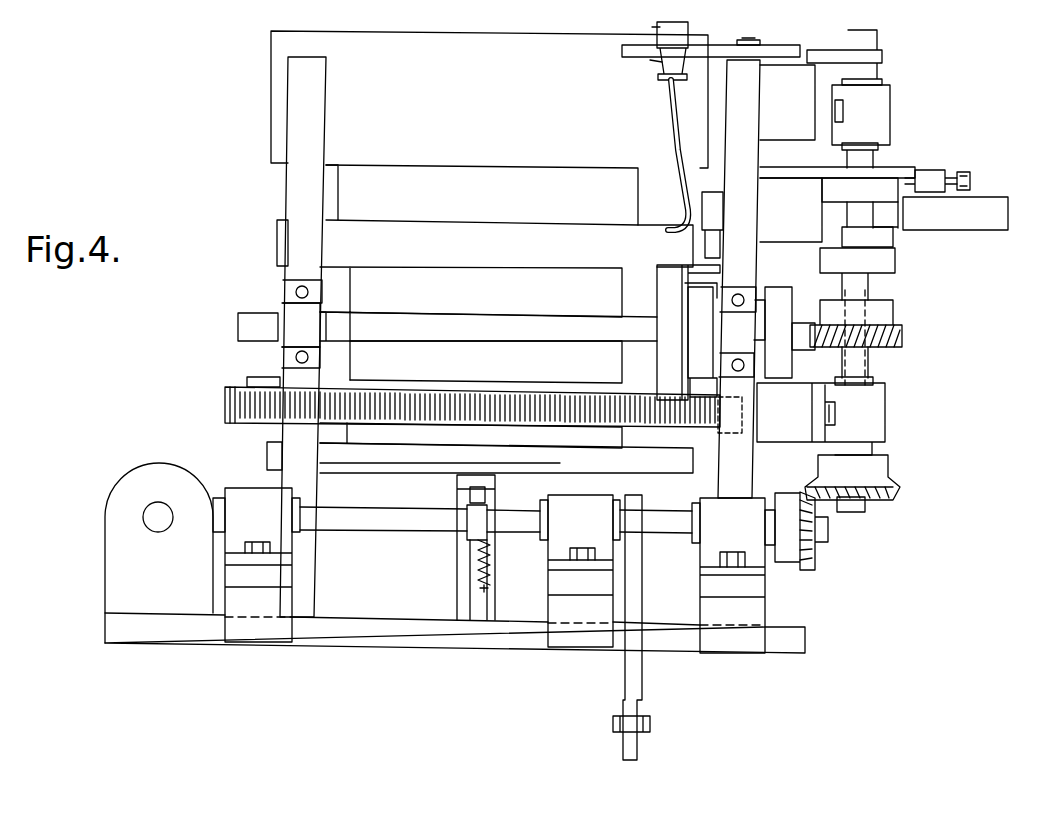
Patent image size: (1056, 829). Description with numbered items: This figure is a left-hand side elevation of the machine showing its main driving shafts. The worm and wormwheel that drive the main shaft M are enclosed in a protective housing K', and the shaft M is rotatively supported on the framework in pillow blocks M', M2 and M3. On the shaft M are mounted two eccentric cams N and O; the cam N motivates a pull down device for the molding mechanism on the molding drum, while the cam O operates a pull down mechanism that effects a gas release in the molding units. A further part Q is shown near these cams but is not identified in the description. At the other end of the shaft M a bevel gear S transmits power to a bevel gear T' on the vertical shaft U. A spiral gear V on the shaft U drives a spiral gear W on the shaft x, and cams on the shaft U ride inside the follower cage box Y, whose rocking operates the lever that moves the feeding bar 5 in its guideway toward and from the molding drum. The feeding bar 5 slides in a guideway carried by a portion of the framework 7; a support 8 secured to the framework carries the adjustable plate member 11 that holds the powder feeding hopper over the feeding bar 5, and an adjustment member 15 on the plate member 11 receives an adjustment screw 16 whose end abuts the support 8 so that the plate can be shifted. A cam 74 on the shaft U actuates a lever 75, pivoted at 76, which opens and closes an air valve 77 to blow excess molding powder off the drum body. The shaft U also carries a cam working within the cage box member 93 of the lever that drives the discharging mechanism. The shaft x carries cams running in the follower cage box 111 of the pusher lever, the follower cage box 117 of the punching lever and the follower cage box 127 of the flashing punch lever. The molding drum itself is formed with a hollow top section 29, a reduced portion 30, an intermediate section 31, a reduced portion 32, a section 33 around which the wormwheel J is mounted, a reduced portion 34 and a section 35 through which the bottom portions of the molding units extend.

The protective housing K' is at (159, 553).
The pillow block M' is at (256, 565).
The pillow block M2 is at (580, 571).
The pillow block M3 is at (733, 575).
The shaft M is at (496, 532).
The bracket Q is at (483, 494).
The eccentric cam O is at (468, 522).
The eccentric cam N is at (642, 497).
The hollow top section 29 is at (270, 44).
The air valve 77 is at (662, 62).
The lever 75 is at (782, 47).
The pivot 76 is at (742, 40).
The reduced portion 30 is at (338, 193).
The intermediate section 31 is at (278, 238).
The reduced portion 32 is at (352, 290).
The shaft x is at (530, 326).
The drum section 33 is at (248, 382).
The wormwheel J is at (225, 405).
The reduced portion 34 is at (352, 433).
The drum section 35 is at (268, 455).
The follower cage box 111 is at (658, 288).
The follower cage box 127 is at (705, 363).
The follower cage box 117 is at (780, 287).
The spiral gear W is at (826, 365).
The cam 74 is at (827, 49).
The adjustable plate member 11 is at (786, 175).
The adjustment member 15 is at (932, 175).
The adjustment screw 16 is at (966, 178).
The machine framework 7 is at (800, 192).
The support 8 is at (903, 212).
The feeding bar 5 is at (1007, 200).
The follower cage box Y is at (905, 213).
The cage box member 93 is at (895, 268).
The spiral gear V is at (905, 335).
The bevel gear T' is at (873, 477).
The vertical shaft U is at (866, 507).
The bevel gear S is at (816, 556).